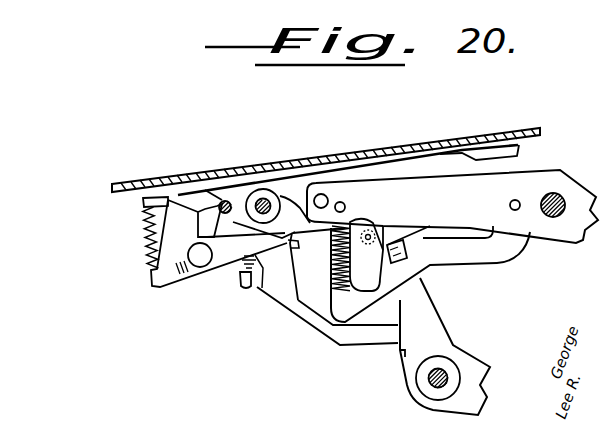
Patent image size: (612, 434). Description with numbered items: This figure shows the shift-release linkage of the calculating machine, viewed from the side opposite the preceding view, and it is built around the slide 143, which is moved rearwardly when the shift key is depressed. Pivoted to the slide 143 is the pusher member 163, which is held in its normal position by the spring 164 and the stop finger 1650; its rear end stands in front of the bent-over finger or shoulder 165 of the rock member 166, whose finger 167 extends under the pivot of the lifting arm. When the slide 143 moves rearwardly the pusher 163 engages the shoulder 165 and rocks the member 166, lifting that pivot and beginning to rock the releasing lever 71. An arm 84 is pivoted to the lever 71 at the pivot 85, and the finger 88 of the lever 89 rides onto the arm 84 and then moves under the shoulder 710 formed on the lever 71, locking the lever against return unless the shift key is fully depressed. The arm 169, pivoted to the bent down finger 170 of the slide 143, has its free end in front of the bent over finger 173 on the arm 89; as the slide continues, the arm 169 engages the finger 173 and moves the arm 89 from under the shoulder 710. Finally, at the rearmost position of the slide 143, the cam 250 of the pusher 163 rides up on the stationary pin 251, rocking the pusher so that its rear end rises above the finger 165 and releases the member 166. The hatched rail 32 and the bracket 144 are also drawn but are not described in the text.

The rail 32 is at (503, 133).
The slide 143 is at (367, 160).
The bent down finger 170 is at (205, 210).
The cam 250 is at (214, 204).
The stationary pin 251 is at (229, 198).
The rock member 166 is at (280, 187).
The finger 167 is at (303, 217).
The releasing lever 71 is at (452, 206).
The pivot 85 is at (518, 200).
The shoulder 710 is at (383, 247).
The finger 88 is at (397, 243).
The arm 84 is at (492, 255).
The lever 89 is at (427, 317).
The bent over finger 173 is at (401, 352).
The arm 169 is at (293, 307).
The bent-over finger or shoulder 165 is at (299, 245).
The stop finger 1650 is at (200, 218).
The spring 164 is at (147, 240).
The pin 144 is at (143, 203).
The pusher member 163 is at (196, 276).